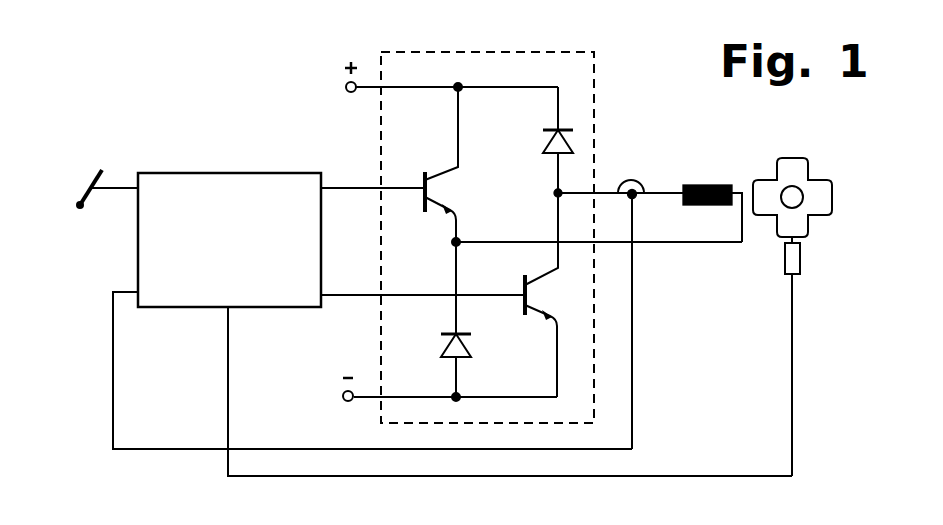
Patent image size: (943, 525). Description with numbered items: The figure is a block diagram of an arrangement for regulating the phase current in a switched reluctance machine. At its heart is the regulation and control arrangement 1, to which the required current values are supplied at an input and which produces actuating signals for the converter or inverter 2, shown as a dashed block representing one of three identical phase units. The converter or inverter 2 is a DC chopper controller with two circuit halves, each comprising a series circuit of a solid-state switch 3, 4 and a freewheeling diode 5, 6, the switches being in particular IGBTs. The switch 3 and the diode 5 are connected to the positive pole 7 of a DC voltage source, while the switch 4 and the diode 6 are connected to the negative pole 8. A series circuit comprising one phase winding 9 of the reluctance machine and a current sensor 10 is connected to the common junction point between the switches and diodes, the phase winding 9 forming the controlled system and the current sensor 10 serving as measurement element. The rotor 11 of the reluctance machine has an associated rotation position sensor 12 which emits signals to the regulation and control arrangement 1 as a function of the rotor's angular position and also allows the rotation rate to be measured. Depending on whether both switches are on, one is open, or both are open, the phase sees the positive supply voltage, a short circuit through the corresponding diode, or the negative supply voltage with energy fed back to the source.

The regulation and control arrangement 1 is at (252, 173).
The converter or inverter 2 is at (543, 52).
The solid-state switch 3 is at (445, 190).
The solid-state switch 4 is at (538, 296).
The freewheeling diode 5 is at (472, 347).
The freewheeling diode 6 is at (546, 135).
The positive pole 7 is at (346, 88).
The negative pole 8 is at (343, 396).
The phase winding 9 is at (703, 183).
The current sensor 10 is at (633, 179).
The rotor 11 is at (812, 192).
The rotation position sensor 12 is at (800, 258).